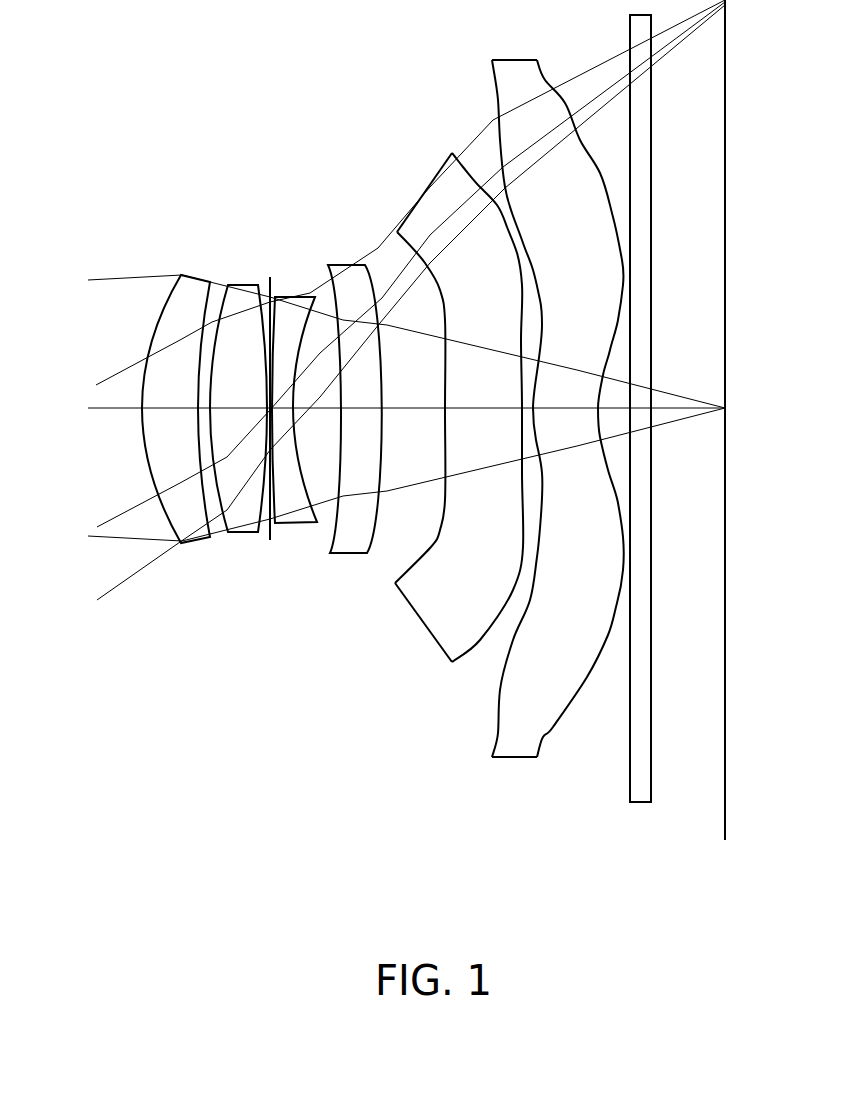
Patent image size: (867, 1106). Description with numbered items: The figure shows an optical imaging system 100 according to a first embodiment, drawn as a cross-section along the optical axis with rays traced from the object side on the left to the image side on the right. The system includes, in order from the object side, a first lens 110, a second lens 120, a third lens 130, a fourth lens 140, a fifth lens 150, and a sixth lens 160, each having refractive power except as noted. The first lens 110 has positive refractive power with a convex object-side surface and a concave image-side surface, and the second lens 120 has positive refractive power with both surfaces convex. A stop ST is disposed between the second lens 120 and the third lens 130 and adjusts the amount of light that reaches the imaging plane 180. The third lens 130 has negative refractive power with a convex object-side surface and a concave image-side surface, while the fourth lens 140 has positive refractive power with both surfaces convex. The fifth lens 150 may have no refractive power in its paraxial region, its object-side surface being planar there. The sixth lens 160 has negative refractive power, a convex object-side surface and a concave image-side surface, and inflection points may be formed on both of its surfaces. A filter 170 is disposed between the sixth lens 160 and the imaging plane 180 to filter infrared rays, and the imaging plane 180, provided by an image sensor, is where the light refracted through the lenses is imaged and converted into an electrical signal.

The optical imaging system 100 is at (377, 118).
The stop ST is at (270, 277).
The first lens 110 is at (195, 543).
The second lens 120 is at (252, 533).
The third lens 130 is at (293, 523).
The fourth lens 140 is at (345, 553).
The fifth lens 150 is at (418, 625).
The sixth lens 160 is at (513, 760).
The filter 170 is at (635, 803).
The imaging plane 180 is at (725, 840).